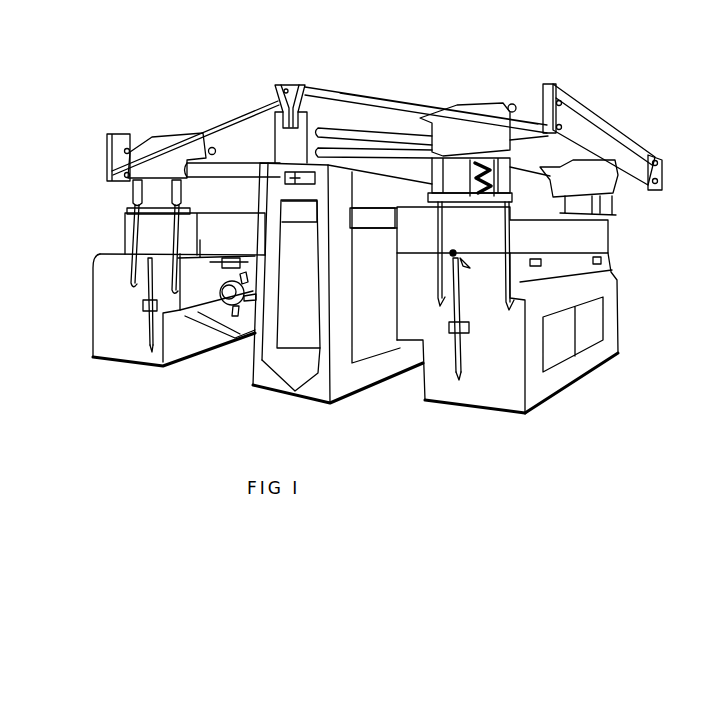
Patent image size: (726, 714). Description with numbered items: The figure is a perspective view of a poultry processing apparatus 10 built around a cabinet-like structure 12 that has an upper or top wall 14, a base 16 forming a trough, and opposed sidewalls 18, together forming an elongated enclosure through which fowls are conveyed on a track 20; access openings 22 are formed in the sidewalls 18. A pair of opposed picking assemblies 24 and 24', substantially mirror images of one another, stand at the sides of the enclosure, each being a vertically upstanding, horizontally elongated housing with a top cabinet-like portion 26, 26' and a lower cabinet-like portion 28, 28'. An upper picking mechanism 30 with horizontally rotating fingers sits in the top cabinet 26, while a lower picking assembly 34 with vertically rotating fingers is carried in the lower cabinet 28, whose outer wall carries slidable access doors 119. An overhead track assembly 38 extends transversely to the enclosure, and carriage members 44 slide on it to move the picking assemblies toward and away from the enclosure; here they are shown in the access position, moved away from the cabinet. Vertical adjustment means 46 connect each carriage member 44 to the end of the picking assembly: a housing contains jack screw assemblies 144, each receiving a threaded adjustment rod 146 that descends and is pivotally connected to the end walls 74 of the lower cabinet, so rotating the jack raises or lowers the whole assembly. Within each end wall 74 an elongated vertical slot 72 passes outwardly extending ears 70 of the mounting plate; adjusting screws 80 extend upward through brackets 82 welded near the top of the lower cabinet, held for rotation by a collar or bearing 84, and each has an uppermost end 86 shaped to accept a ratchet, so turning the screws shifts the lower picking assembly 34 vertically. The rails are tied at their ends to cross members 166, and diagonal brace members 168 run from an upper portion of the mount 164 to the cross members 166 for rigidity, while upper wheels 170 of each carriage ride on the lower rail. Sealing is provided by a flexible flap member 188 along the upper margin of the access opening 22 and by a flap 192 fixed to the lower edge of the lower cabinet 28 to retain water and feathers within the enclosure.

The poultry processing apparatus 10 is at (400, 90).
The cabinet-like structure 12 is at (362, 396).
The upper or top wall 14 is at (262, 171).
The base 16 is at (265, 386).
The sidewalls 18 is at (330, 300).
The track 20 is at (295, 186).
The access openings 22 is at (312, 277).
The picking assembly 24 is at (650, 325).
The picking assembly 24' is at (144, 310).
The top cabinet-like portion 26 is at (527, 230).
The top cabinet-like portion 26' is at (166, 234).
The lower cabinet-like portion 28 is at (590, 333).
The lower cabinet-like portion 28' is at (153, 308).
The upper picking mechanism 30 is at (230, 258).
The lower picking assembly 34 is at (225, 291).
The overhead track assembly 38 is at (581, 90).
The carriage members 44 is at (172, 138).
The vertical adjustment means 46 is at (120, 189).
The ears 70 is at (148, 334).
The elongated vertical slot 72 is at (150, 346).
The end walls 74 is at (152, 357).
The adjusting screws 80 is at (146, 289).
The brackets 82 is at (463, 262).
The collar or bearing 84 is at (462, 252).
The uppermost end 86 is at (151, 254).
The slidable access doors 119 is at (552, 357).
The jack screw assemblies 144 is at (186, 197).
The adjustment rod 146 is at (513, 227).
The mount 164 is at (289, 88).
The cross members 166 is at (115, 135).
The brace members 168 is at (212, 120).
The upper wheels 170 is at (220, 150).
The flexible flap member 188 is at (360, 213).
The flap 192 is at (194, 318).